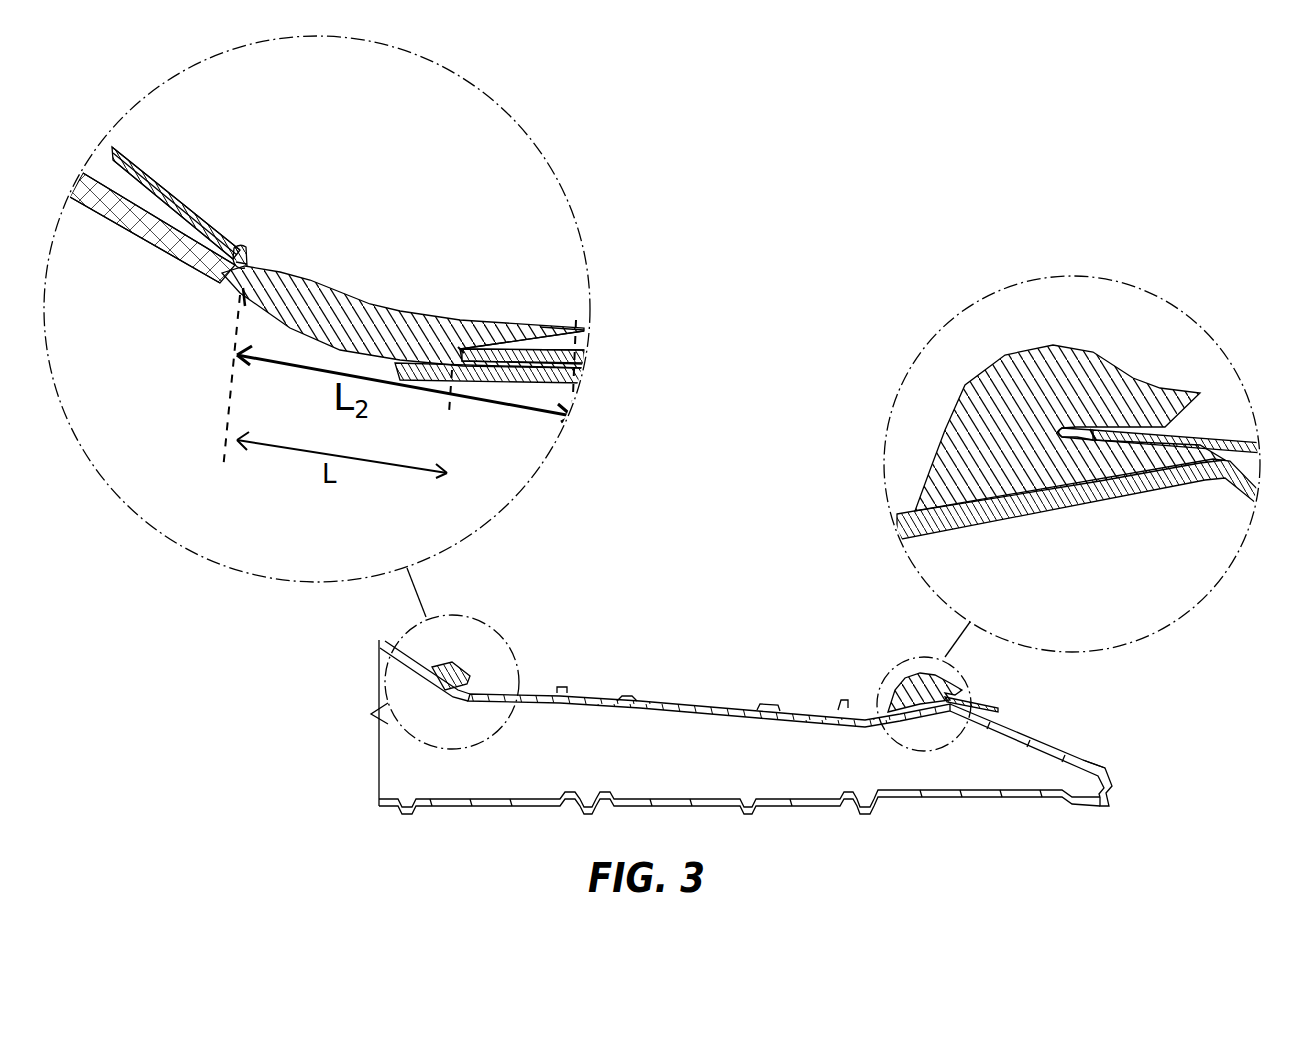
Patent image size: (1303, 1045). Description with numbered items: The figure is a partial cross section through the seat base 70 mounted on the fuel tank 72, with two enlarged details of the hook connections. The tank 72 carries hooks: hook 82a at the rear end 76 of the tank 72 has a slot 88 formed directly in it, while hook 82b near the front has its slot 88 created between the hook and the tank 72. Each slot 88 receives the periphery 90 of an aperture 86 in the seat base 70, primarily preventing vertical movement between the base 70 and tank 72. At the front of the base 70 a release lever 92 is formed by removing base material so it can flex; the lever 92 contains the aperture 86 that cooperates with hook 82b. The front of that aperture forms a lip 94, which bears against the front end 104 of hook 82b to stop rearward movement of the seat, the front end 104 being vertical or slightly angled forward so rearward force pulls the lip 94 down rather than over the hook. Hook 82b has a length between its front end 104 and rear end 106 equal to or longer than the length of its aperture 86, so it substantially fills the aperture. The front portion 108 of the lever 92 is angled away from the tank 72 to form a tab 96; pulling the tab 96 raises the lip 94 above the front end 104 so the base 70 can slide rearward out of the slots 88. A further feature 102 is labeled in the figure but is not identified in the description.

The seat base 70 is at (580, 353).
The tank 72 is at (433, 363).
The rear end of the tank 76 is at (1104, 713).
The hook 82a is at (1035, 421).
The hook 82b is at (332, 300).
The aperture 86 is at (250, 272).
The slot 88 is at (553, 343).
The periphery of the aperture 90 is at (463, 345).
The release lever 92 is at (186, 185).
The lip 94 is at (245, 266).
The tab 96 is at (126, 158).
The first surface 102 is at (240, 266).
The front end of hook 104 is at (258, 273).
The rear end of hook 106 is at (557, 327).
The front portion of the lever 108 is at (142, 183).